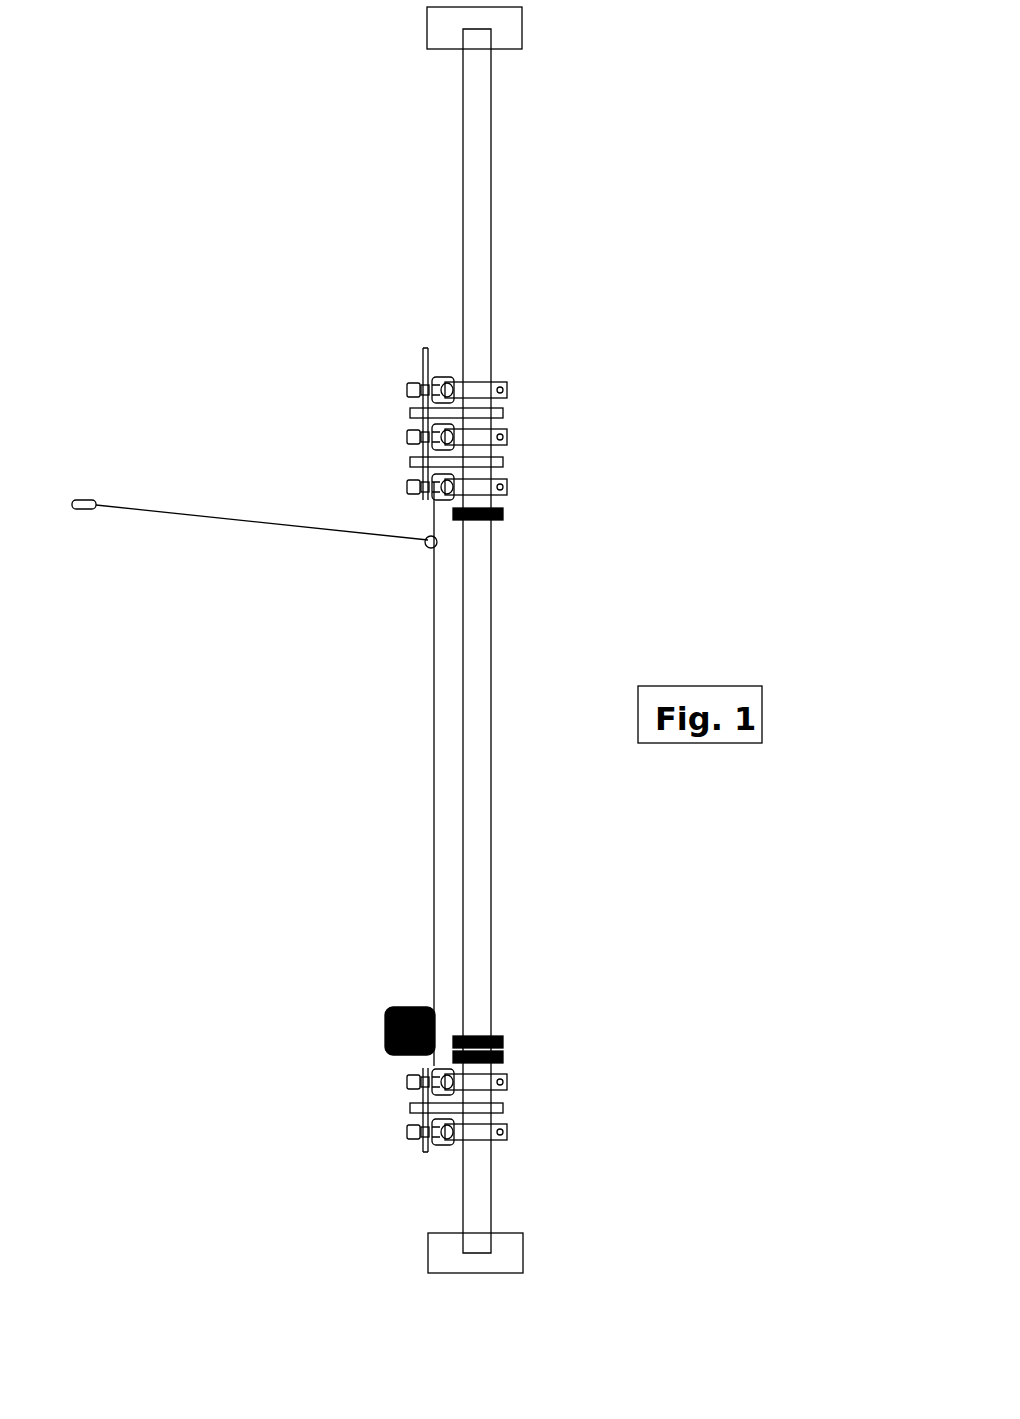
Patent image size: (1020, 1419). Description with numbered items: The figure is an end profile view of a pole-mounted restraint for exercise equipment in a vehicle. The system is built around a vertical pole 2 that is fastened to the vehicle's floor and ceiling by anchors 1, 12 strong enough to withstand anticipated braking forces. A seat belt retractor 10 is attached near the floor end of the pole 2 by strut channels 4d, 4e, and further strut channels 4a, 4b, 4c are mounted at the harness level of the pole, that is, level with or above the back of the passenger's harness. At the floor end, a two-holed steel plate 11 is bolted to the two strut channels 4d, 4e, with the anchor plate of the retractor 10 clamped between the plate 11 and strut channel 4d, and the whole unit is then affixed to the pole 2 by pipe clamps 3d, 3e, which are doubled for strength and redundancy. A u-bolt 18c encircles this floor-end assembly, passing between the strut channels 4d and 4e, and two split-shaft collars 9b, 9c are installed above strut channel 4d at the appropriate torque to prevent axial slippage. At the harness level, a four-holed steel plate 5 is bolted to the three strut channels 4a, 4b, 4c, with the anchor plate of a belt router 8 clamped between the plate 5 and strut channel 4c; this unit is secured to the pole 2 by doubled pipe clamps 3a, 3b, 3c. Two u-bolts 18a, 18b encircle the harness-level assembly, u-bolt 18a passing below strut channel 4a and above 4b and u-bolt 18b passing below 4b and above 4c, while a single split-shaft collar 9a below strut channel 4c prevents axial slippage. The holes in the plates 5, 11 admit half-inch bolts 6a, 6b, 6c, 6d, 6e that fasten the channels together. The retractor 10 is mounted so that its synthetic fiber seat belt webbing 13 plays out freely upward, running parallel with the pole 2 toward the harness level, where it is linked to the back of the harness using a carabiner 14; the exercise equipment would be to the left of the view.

The anchor 1 is at (512, 38).
The pole 2 is at (482, 238).
The pipe clamp 3a is at (507, 392).
The pipe clamp 3b is at (507, 440).
The pipe clamp 3c is at (507, 487).
The pipe clamp 3d is at (507, 1082).
The pipe clamp 3e is at (507, 1132).
The strut channel 4a is at (413, 368).
The strut channel 4b is at (407, 422).
The strut channel 4c is at (410, 468).
The strut channel 4d is at (408, 1105).
The strut channel 4e is at (437, 1148).
The four-holed steel plate 5 is at (415, 352).
The bolt 6a is at (407, 392).
The bolt 6b is at (407, 440).
The bolt 6c is at (407, 488).
The bolt 6d is at (407, 1083).
The bolt 6e is at (407, 1133).
The belt router 8 is at (427, 548).
The split-shaft collar 9a is at (503, 520).
The split-shaft collar 9b is at (503, 1040).
The split-shaft collar 9c is at (503, 1055).
The seat belt retractor 10 is at (383, 1040).
The two-holed steel plate 11 is at (420, 1150).
The anchor 12 is at (517, 1257).
The webbing 13 is at (430, 810).
The carabiner 14 is at (88, 497).
The u-bolt 18a is at (505, 415).
The u-bolt 18b is at (505, 465).
The u-bolt 18c is at (505, 1108).